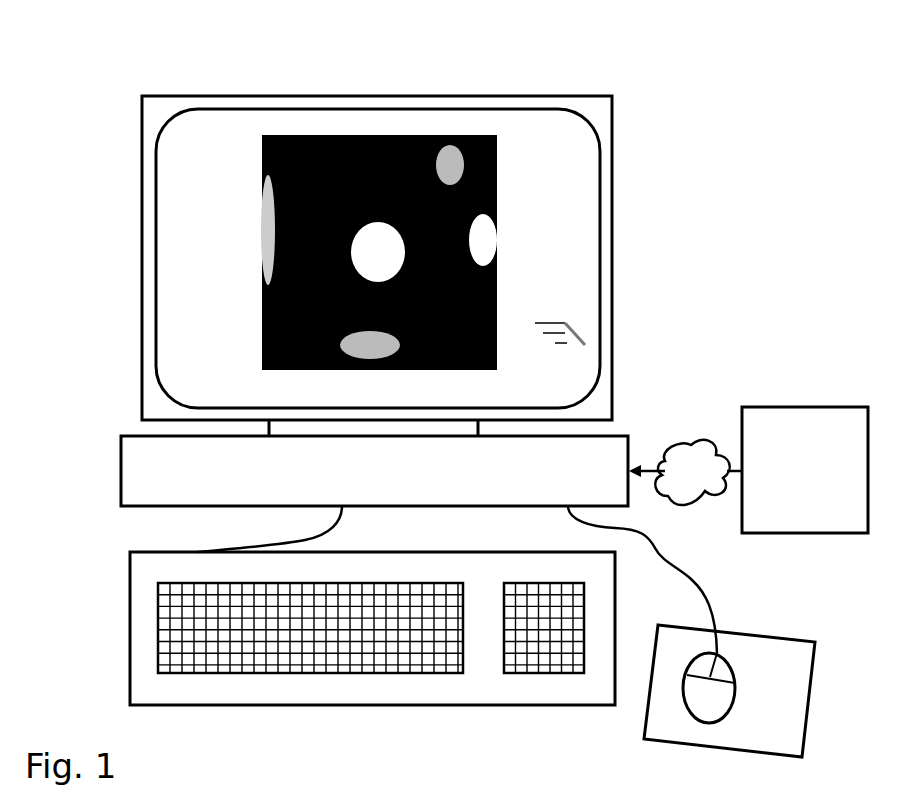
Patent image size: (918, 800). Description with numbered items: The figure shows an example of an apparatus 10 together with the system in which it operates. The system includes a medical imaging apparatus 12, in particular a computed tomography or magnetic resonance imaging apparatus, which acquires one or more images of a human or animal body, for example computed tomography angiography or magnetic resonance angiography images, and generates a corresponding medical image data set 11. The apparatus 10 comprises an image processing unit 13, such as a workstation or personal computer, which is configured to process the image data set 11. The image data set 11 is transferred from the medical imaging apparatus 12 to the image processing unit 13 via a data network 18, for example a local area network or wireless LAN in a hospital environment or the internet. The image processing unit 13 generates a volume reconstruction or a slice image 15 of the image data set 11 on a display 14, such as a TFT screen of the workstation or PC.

The apparatus 10 is at (670, 78).
The medical image data set 11 is at (729, 466).
The medical imaging apparatus 12 is at (793, 483).
The image processing unit 13 is at (177, 482).
The display 14 is at (293, 108).
The slice image 15 is at (463, 135).
The data network 18 is at (679, 483).